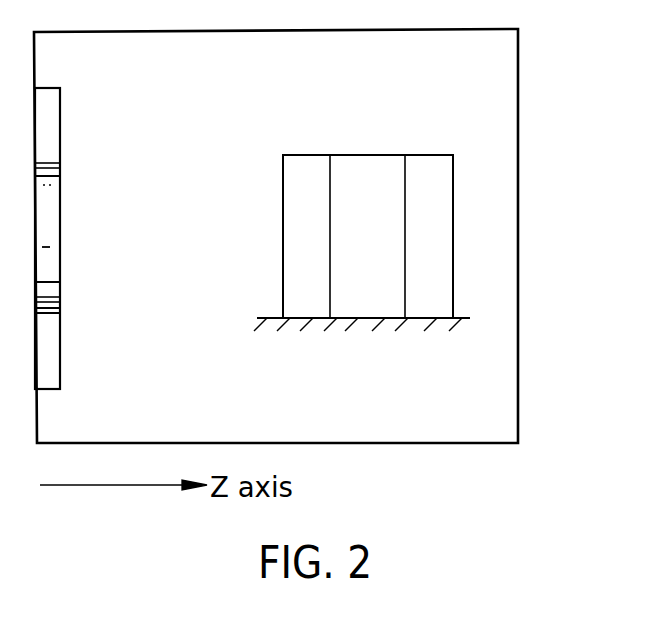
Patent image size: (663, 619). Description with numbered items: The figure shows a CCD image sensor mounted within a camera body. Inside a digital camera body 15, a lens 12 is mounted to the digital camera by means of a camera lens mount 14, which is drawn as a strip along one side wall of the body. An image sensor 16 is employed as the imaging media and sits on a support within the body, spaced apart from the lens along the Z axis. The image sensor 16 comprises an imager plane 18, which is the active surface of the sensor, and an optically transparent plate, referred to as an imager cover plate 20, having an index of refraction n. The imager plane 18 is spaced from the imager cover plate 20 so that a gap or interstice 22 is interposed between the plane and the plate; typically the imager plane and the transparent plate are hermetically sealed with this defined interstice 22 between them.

The lens 12 is at (60, 210).
The camera lens mount 14 is at (60, 127).
The digital camera body 15 is at (518, 88).
The image sensor 16 is at (372, 139).
The imager plane 18 is at (403, 195).
The imager cover plate 20 is at (307, 152).
The interstice 22 is at (365, 308).